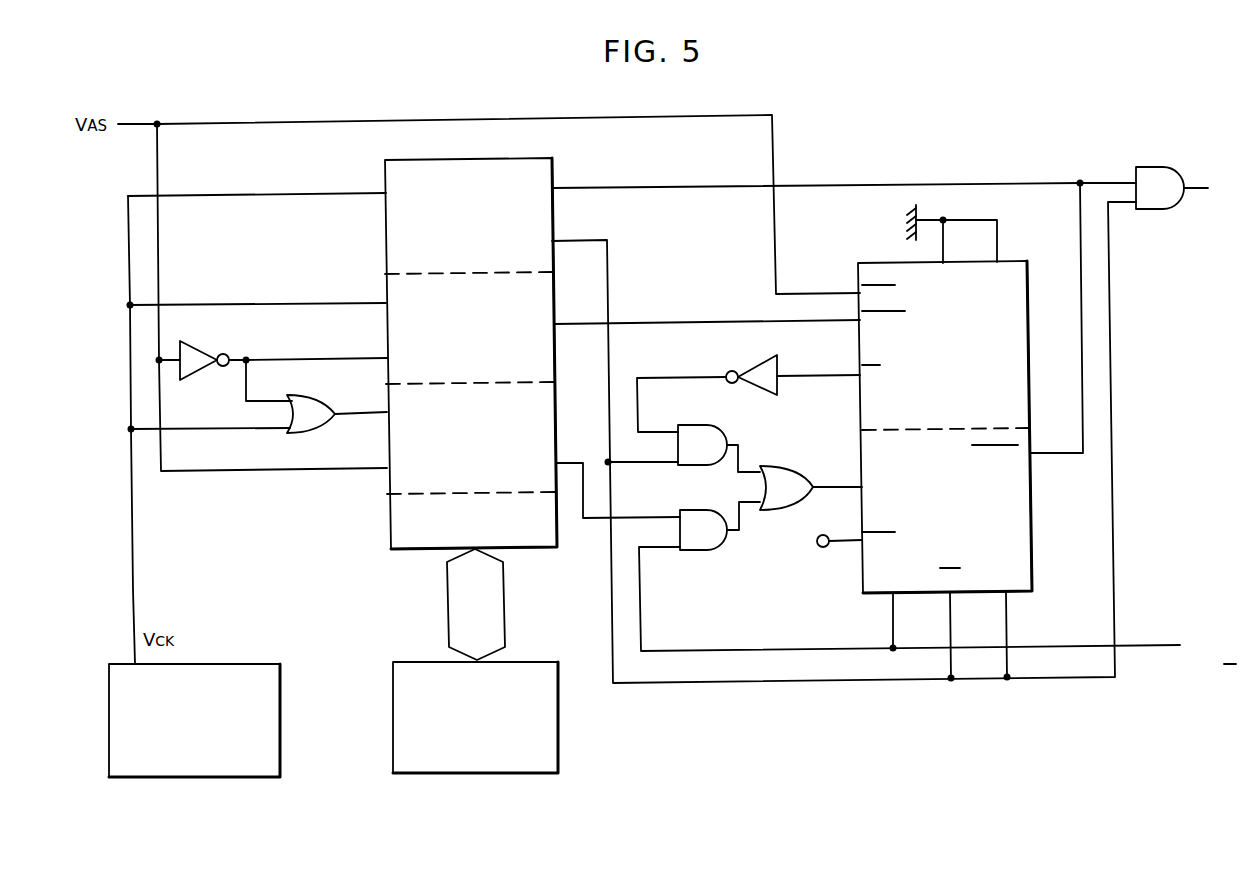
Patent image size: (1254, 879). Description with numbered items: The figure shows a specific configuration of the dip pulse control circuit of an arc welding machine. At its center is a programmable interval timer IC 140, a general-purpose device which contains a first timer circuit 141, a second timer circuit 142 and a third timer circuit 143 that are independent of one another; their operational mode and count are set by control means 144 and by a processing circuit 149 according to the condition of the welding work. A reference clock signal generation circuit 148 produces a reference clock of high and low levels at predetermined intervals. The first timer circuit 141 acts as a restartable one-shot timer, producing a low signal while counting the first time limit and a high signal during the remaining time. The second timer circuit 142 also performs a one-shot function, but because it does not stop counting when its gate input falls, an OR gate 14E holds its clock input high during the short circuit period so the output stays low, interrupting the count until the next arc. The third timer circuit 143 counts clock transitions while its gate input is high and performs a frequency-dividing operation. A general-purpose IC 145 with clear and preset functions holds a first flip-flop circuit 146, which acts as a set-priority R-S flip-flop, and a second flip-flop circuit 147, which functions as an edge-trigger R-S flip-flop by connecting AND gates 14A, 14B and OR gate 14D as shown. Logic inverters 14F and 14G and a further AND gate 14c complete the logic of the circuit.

The programmable interval timer IC 140 is at (395, 551).
The first timer circuit 141 is at (387, 333).
The second timer circuit 142 is at (388, 446).
The third timer circuit 143 is at (386, 236).
The control means 144 is at (390, 520).
The IC having two D-type flip-flop circuits 145 is at (1032, 590).
The first flip-flop circuit 146 is at (1027, 287).
The second flip-flop circuit 147 is at (1030, 517).
The reference clock signal generation circuit 148 is at (250, 664).
The processing circuit 149 is at (562, 714).
The AND gate 14A is at (700, 466).
The AND gate 14B is at (700, 551).
The AND gate 14c is at (1155, 210).
The OR gate 14D is at (778, 466).
The OR gate 14E is at (300, 395).
The logic inverter 14F is at (770, 357).
The logic inverter 14G is at (196, 342).